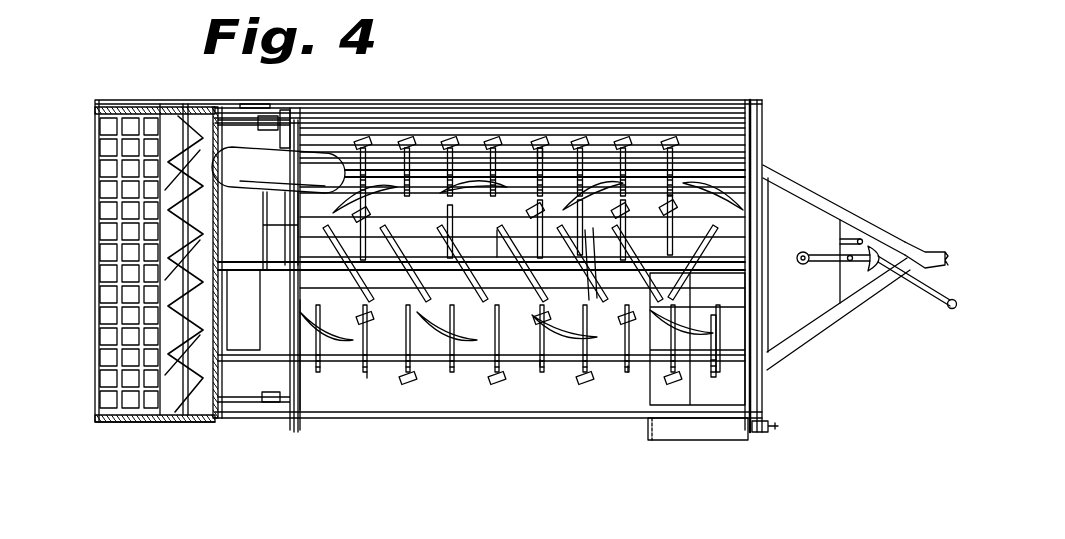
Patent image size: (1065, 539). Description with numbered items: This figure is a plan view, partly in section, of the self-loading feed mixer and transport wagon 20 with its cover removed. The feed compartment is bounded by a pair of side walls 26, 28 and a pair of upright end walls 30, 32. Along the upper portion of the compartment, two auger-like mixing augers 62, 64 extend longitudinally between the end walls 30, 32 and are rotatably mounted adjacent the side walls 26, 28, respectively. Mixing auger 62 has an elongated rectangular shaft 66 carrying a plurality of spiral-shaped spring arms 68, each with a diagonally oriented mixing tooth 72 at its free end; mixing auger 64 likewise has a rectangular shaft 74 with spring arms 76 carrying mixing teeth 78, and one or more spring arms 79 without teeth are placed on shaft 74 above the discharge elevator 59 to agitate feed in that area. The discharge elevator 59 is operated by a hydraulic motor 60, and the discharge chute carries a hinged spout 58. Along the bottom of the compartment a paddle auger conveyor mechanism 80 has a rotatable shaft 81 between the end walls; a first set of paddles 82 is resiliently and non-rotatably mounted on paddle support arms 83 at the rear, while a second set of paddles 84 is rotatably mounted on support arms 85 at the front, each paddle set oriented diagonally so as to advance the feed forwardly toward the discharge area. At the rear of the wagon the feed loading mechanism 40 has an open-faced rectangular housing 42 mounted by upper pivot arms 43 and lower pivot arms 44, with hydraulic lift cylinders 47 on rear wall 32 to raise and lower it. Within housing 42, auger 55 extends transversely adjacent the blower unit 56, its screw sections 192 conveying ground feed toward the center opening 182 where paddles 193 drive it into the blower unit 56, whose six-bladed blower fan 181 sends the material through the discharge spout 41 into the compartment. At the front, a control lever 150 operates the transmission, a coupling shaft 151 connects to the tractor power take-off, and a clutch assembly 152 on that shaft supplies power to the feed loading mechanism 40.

The feed mixer and transport wagon 20 is at (702, 80).
The side wall 26 is at (440, 110).
The side wall 28 is at (410, 416).
The end wall 30 is at (737, 115).
The end wall 32 is at (298, 393).
The feed loading mechanism 40 is at (92, 88).
The discharge spout 41 is at (288, 160).
The housing 42 is at (113, 423).
The upper pivot arms 43 is at (247, 105).
The lower pivot arms 44 is at (228, 128).
The hydraulic lift cylinders 47 is at (275, 125).
The auger 55 is at (175, 316).
The blower unit 56 is at (300, 387).
The hinged spout 58 is at (695, 434).
The discharge elevator 59 is at (735, 382).
The hydraulic motor 60 is at (765, 432).
The mixing auger 62 is at (386, 140).
The mixing auger 64 is at (388, 384).
The shaft 66 is at (432, 165).
The spiral-shaped spring arms 68 is at (538, 152).
The mixing tooth 72 is at (400, 145).
The shaft 74 is at (437, 363).
The spiral-shaped spring arms 76 is at (367, 378).
The mixing teeth 78 is at (365, 370).
The spiral-shaped spring arms 79 is at (705, 362).
The paddle auger conveyor mechanism 80 is at (735, 233).
The conveyor shaft 81 is at (500, 257).
The feed engaging paddles 82 is at (277, 218).
The paddle support arms 83 is at (473, 208).
The feed engaging paddles 84 is at (720, 193).
The paddle support arms 85 is at (680, 138).
The control lever 150 is at (830, 262).
The coupling shaft 151 is at (920, 297).
The clutch assembly 152 is at (860, 240).
The blower fan 181 is at (180, 417).
The opening 182 is at (213, 283).
The screw sections 192 is at (173, 157).
The paddles 193 is at (210, 257).